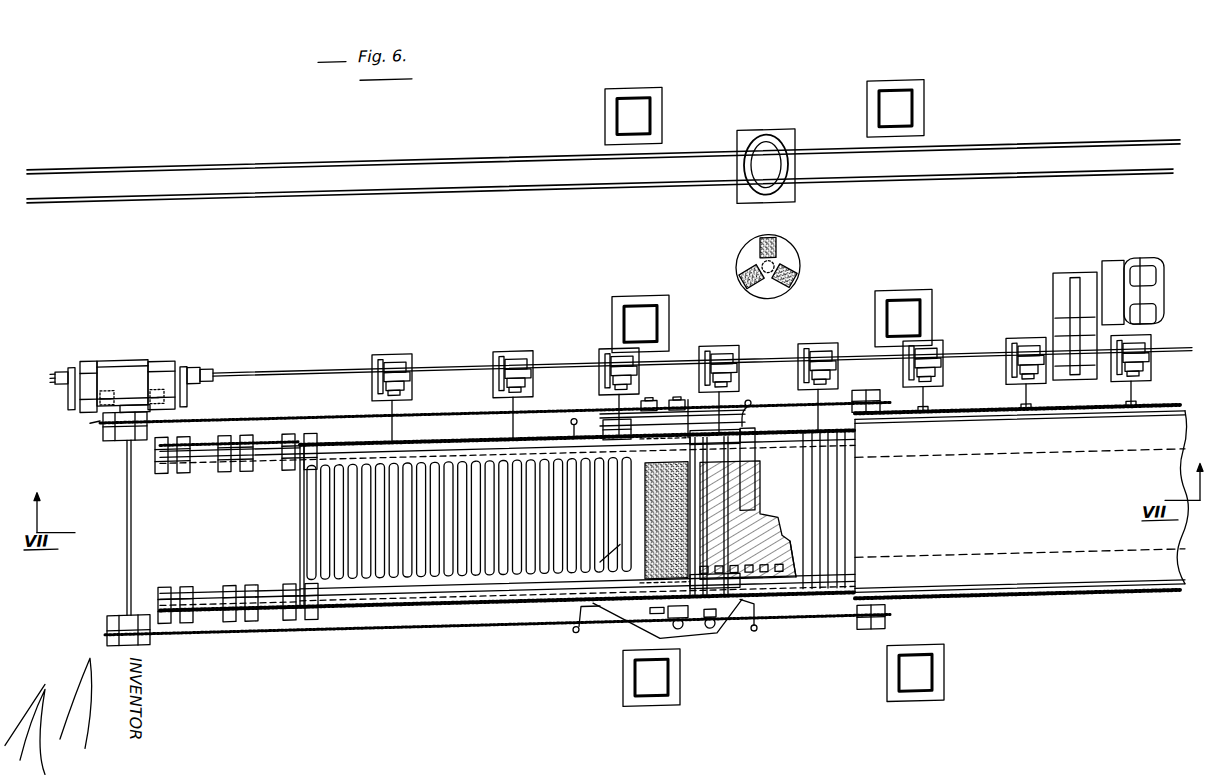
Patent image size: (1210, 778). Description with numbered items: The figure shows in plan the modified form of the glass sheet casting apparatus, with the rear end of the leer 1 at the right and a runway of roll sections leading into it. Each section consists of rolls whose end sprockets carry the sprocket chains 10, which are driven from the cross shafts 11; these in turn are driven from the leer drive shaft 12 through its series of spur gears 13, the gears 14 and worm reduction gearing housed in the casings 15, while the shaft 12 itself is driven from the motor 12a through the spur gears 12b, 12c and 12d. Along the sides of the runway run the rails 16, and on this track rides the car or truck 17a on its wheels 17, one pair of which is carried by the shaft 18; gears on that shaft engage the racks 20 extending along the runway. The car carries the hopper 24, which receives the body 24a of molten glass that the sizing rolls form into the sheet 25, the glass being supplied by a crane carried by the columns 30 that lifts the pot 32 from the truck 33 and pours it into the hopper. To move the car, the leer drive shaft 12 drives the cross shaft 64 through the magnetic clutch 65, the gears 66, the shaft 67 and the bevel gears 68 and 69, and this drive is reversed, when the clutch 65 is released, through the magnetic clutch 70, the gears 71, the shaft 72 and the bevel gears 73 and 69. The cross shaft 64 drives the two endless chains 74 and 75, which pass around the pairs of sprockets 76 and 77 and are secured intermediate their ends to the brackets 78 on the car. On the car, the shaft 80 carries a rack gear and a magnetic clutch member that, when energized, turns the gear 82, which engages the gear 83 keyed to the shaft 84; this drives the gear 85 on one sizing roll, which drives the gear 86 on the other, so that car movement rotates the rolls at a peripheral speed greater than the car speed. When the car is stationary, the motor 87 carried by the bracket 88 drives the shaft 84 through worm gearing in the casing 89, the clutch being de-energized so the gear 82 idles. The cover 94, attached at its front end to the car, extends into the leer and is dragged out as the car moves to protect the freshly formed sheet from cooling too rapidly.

The rear end of the leer 1 is at (1021, 489).
The sprocket chains 10 is at (507, 531).
The cross shafts 11 is at (1045, 396).
The leer drive shaft 12 is at (702, 345).
The motor 12a is at (1133, 274).
The spur gear 12b is at (1059, 313).
The spur gear 12c is at (1039, 325).
The spur gear 12d is at (1042, 336).
The spur gears 13 is at (1004, 358).
The gears 14 is at (1001, 362).
The worm reduction gearing casings 15 is at (989, 371).
The rails 16 is at (236, 528).
The wheels 17 is at (667, 560).
The car or truck 17a is at (607, 424).
The shaft 18 is at (559, 597).
The racks 20 is at (265, 533).
The hopper 24 is at (740, 512).
The body of molten glass 24a is at (733, 516).
The sheet 25 is at (772, 511).
The columns 30 is at (765, 416).
The pot 32 is at (766, 145).
The truck 33 is at (747, 177).
The cross shaft 64 is at (109, 528).
The magnetic clutch 65 is at (200, 367).
The gears 66 is at (168, 391).
The shaft 67 is at (169, 408).
The bevel gear 68 is at (161, 362).
The bevel gear 69 is at (123, 371).
The magnetic clutch 70 is at (40, 366).
The gears 71 is at (46, 369).
The shaft 72 is at (56, 433).
The bevel gear 73 is at (96, 359).
The endless chain 74 is at (495, 401).
The endless chain 75 is at (497, 648).
The sprockets 76 is at (136, 550).
The sprockets 77 is at (897, 502).
The brackets 78 is at (567, 524).
The shaft 80 is at (702, 519).
The gear 82 is at (754, 399).
The gear 83 is at (688, 382).
The shaft 84 is at (756, 519).
The gear 85 is at (666, 396).
The gear 86 is at (653, 388).
The motor 87 is at (685, 643).
The bracket 88 is at (666, 625).
The casing 89 is at (720, 657).
The cover 94 is at (845, 544).